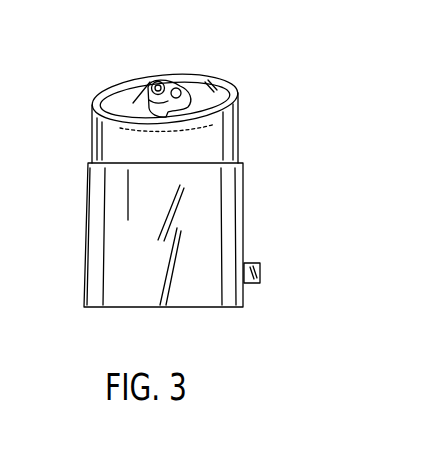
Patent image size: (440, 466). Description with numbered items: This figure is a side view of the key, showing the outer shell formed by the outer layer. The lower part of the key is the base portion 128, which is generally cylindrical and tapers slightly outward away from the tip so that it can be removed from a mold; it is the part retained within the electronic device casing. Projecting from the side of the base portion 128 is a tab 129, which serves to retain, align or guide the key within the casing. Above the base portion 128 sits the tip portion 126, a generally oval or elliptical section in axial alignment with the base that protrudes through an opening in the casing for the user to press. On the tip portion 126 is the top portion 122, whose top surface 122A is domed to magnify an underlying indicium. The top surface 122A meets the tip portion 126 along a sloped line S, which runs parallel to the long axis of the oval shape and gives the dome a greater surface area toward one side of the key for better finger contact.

The sloped line S is at (118, 109).
The top portion 122 is at (223, 82).
The top surface 122A is at (170, 112).
The tip portion 126 is at (238, 138).
The base portion 128 is at (243, 212).
The tab 129 is at (261, 275).